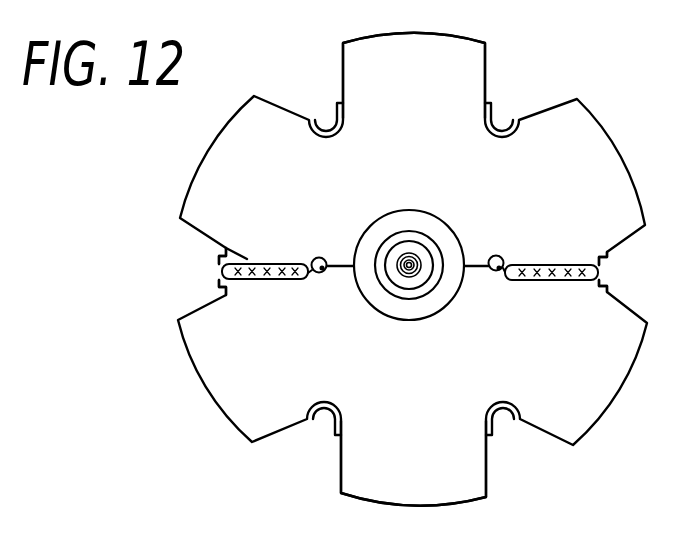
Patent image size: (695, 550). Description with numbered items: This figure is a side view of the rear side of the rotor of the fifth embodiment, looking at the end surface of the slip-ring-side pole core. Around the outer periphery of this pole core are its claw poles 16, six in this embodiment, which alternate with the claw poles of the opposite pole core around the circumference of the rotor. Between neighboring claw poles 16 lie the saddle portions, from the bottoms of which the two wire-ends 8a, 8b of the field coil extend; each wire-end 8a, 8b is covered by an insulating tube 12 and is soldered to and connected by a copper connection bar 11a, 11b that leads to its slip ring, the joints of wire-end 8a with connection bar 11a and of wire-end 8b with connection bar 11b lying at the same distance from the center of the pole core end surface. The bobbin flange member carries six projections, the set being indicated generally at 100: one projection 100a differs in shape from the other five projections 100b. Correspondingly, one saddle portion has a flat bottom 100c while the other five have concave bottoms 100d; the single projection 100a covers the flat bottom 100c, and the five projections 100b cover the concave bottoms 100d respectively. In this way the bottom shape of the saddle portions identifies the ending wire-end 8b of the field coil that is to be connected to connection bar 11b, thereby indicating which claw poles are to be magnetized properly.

The claw poles 16 is at (604, 164).
The tab 100 is at (594, 285).
The projection 100a is at (224, 249).
The projections 100b is at (328, 110).
The flat bottom 100c is at (247, 257).
The concave bottoms 100d is at (498, 413).
The insulating tubes 12 is at (275, 279).
The wire-end 8a is at (502, 283).
The wire-end 8b is at (308, 277).
The connection bar 11a is at (480, 260).
The connection bar 11b is at (338, 261).